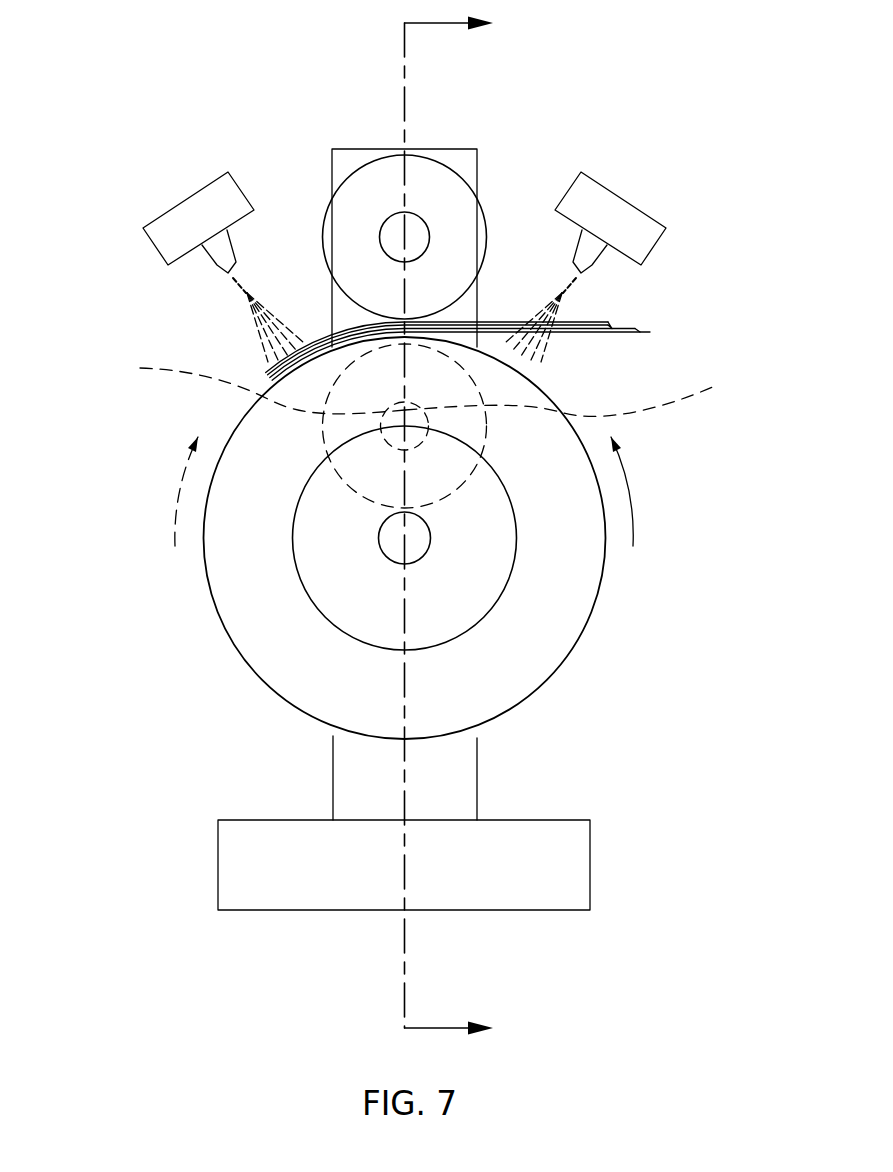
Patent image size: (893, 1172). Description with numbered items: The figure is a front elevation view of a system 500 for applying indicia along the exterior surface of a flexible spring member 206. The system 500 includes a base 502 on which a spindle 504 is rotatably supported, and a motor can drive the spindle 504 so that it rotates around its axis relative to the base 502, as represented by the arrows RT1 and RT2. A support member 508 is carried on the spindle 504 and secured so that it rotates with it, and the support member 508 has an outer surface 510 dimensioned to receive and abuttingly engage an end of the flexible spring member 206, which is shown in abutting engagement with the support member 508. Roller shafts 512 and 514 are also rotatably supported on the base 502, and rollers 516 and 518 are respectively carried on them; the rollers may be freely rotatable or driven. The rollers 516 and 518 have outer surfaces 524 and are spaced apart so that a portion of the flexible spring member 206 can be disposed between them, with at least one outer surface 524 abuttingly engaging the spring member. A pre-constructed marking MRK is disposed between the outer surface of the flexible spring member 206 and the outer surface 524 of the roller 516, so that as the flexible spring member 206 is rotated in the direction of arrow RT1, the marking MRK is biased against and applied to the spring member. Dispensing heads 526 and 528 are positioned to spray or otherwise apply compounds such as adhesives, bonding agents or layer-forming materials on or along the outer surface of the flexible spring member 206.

The system 500 is at (607, 92).
The base 502 is at (477, 768).
The spindle 504 is at (383, 553).
The support member 508 is at (463, 598).
The outer surface 510 is at (512, 568).
The roller shaft 512 is at (392, 213).
The roller shaft 514 is at (538, 426).
The roller 516 is at (438, 196).
The roller 518 is at (252, 382).
The outer surface 524 is at (484, 218).
The dispensing head 526 is at (628, 213).
The dispensing head 528 is at (178, 217).
The flexible spring member 206 is at (222, 632).
The pre-constructed marking MRK is at (665, 310).
The arrow RT1 is at (630, 488).
The arrow RT2 is at (180, 493).